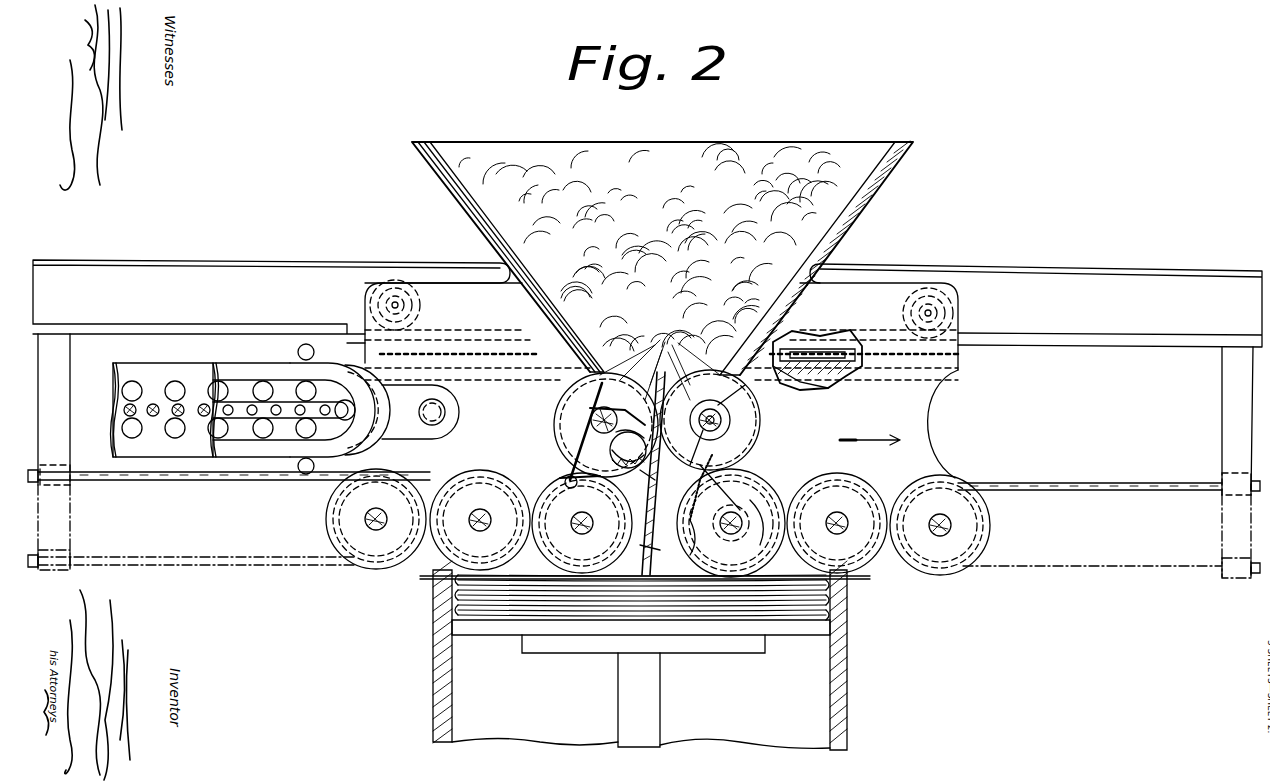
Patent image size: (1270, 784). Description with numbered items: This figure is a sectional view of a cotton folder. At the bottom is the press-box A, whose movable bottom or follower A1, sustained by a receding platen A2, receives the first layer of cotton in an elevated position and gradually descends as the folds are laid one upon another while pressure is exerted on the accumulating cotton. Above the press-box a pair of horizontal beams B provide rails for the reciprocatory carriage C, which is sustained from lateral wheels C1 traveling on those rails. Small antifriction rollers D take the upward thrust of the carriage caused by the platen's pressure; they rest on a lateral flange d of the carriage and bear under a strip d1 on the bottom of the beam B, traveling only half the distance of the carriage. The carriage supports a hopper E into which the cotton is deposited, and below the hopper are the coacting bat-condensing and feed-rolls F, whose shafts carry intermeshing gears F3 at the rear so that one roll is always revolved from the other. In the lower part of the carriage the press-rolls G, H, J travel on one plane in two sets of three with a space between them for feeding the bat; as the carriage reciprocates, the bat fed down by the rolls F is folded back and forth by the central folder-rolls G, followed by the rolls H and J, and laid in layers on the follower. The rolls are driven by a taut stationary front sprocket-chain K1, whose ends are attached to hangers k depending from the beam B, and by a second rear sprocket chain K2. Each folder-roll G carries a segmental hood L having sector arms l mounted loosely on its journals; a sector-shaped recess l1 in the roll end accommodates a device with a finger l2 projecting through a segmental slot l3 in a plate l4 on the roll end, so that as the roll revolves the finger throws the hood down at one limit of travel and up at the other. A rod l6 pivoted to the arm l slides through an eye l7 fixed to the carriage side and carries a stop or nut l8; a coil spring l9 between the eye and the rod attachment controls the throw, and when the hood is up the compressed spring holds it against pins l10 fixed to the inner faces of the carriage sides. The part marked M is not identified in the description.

The press-box A is at (640, 655).
The follower A1 is at (796, 628).
The receding platen A2 is at (698, 652).
The horizontal beams B is at (220, 278).
The reciprocatory carriage C is at (651, 380).
The lateral wheels C1 is at (396, 300).
The antifriction rollers D is at (815, 352).
The lateral flange d is at (810, 384).
The strip d1 is at (850, 362).
The hopper E is at (822, 152).
The bat-condensing and feed-rolls F is at (699, 383).
The intermeshing gears F3 is at (696, 409).
The central press-rolls or folder-rolls G is at (556, 503).
The press-rolls H is at (467, 502).
The press-rolls J is at (358, 517).
The hangers k is at (60, 396).
The stationary sprocket-chain K1 is at (1090, 565).
The second sprocket chain K2 is at (1082, 452).
The segmental hood L is at (565, 500).
The sector arms l is at (666, 456).
The sector-shaped recess l1 is at (744, 488).
The finger l2 is at (659, 518).
The segmental slot l3 is at (673, 508).
The plate l4 is at (768, 540).
The rod l6 is at (786, 458).
The eye l7 is at (790, 424).
The stop or nut l8 is at (745, 445).
The coil spring l9 is at (793, 442).
The pins l10 is at (560, 470).
The perforated plate M is at (237, 372).